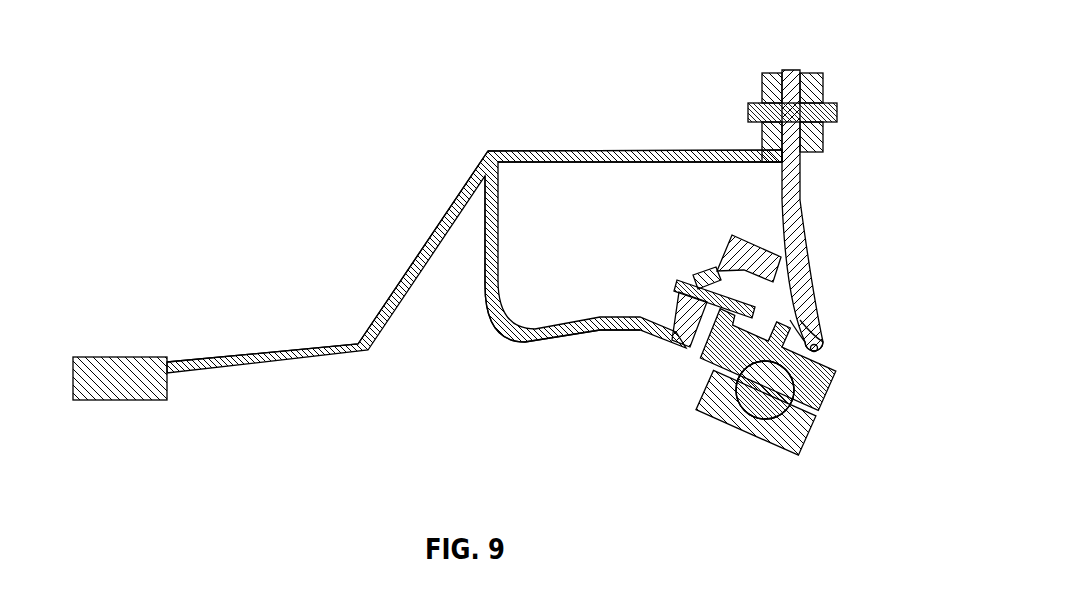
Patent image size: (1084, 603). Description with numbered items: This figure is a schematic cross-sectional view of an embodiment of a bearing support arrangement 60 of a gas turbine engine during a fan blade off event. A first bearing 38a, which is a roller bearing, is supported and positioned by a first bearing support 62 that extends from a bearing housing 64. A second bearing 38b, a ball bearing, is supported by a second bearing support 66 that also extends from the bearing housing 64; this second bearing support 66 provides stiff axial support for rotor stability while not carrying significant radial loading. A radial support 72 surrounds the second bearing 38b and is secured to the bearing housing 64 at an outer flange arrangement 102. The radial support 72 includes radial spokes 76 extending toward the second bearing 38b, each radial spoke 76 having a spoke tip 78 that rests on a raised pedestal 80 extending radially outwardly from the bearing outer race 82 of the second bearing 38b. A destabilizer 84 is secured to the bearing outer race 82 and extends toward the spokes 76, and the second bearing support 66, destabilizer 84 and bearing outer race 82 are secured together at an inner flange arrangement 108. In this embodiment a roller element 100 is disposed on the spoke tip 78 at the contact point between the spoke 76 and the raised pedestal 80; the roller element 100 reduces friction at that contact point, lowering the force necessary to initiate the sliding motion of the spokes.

The bearing support arrangement 60 is at (168, 43).
The outer flange arrangement 102 is at (845, 44).
The bearing housing 64 is at (593, 150).
The first bearing support 62 is at (425, 250).
The second bearing support 66 is at (517, 338).
The first bearing 38a is at (122, 383).
The second bearing 38b is at (732, 425).
The radial support 72 is at (820, 150).
The radial spoke 76 is at (780, 213).
The spoke tip 78 is at (822, 340).
The raised pedestal 80 is at (805, 315).
The bearing outer race 82 is at (827, 393).
The destabilizer 84 is at (683, 278).
The roller element 100 is at (823, 351).
The inner flange arrangement 108 is at (750, 345).